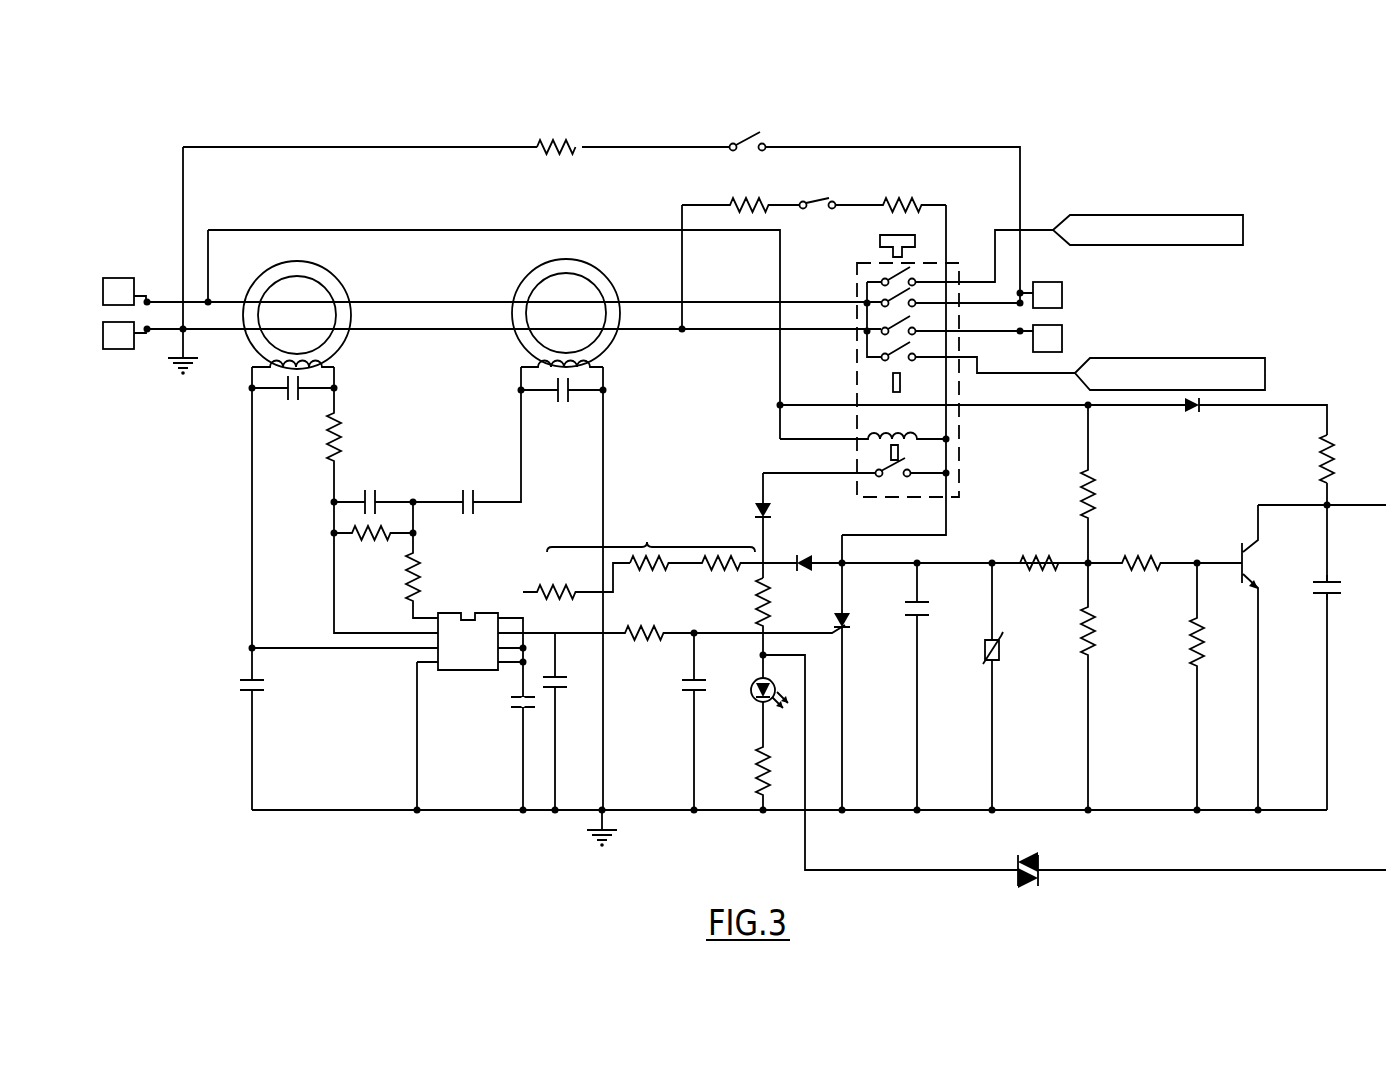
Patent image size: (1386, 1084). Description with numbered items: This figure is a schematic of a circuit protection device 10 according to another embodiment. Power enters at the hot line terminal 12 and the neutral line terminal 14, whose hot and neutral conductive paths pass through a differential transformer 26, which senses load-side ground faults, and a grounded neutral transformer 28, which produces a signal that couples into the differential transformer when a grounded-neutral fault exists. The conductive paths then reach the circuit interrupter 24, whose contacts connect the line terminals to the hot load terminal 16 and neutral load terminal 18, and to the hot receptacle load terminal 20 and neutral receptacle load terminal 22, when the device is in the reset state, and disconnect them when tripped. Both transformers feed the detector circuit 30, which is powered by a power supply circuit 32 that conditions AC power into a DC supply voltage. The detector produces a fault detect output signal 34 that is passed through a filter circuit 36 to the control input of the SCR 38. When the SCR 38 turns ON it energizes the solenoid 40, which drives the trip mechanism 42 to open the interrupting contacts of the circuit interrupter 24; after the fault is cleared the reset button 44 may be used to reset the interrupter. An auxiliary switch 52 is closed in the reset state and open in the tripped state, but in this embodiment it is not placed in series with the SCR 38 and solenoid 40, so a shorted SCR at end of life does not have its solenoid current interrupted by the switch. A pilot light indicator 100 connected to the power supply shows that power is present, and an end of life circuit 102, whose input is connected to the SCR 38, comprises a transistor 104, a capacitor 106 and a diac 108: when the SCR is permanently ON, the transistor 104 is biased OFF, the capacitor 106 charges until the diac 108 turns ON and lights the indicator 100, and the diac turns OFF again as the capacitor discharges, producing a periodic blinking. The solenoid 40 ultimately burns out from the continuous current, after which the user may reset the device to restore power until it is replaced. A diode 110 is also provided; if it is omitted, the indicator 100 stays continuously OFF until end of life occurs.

The protective device 10 is at (603, 96).
The hot line terminal 12 is at (103, 291).
The neutral line terminal 14 is at (103, 334).
The hot load terminal 16 is at (1046, 282).
The neutral load terminal 18 is at (1033, 348).
The hot receptacle load terminal 20 is at (1195, 215).
The neutral receptacle load terminal 22 is at (1240, 358).
The circuit interrupter 24 is at (858, 280).
The differential transformer 26 is at (346, 290).
The grounded neutral transformer 28 is at (614, 290).
The detector circuit 30 is at (455, 612).
The power supply circuit 32 is at (647, 531).
The fault detect output signal 34 is at (513, 600).
The filter circuit 36 is at (672, 664).
The SCR 38 is at (846, 622).
The solenoid 40 is at (920, 430).
The trip mechanism 42 is at (891, 383).
The reset button 44 is at (880, 240).
The auxiliary switch 52 is at (896, 489).
The pilot light indicator 100 is at (753, 703).
The end of life circuit 102 is at (1050, 536).
The transistor 104 is at (1247, 535).
The capacitor 106 is at (1320, 576).
The diac 108 is at (1045, 879).
The diode 110 is at (763, 501).